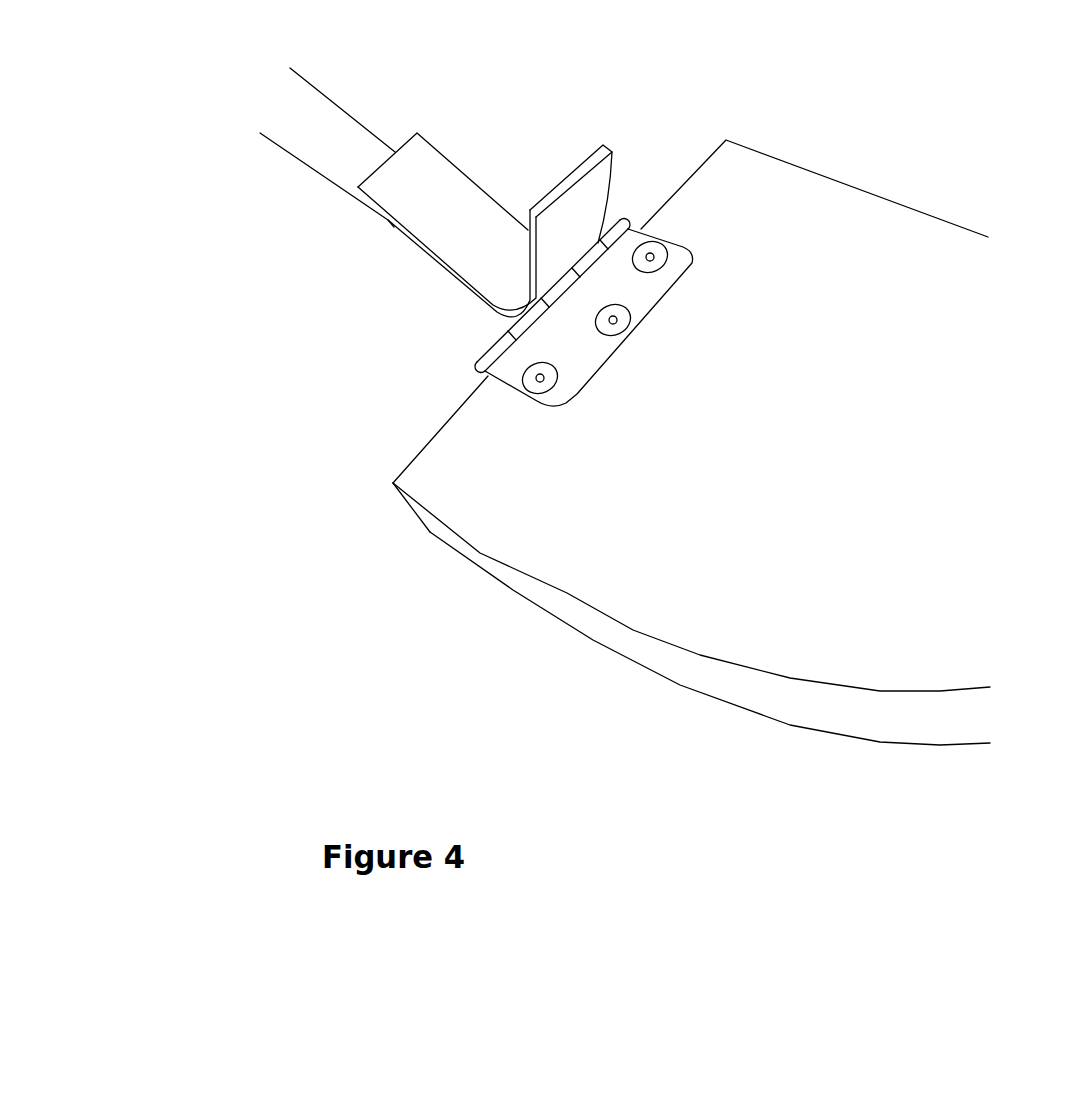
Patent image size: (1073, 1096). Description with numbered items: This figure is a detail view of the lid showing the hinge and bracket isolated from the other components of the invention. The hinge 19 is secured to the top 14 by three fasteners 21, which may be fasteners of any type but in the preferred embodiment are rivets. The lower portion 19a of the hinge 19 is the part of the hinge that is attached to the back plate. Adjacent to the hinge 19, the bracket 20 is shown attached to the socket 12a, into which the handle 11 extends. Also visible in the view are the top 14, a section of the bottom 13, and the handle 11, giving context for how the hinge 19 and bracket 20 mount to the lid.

The handle 11 is at (263, 123).
The socket 12a is at (413, 258).
The bottom 13 is at (758, 715).
The top 14 is at (903, 247).
The hinge 19 is at (552, 410).
The lower portion of the hinge 19a is at (477, 363).
The bracket 20 is at (562, 192).
The fasteners 21 is at (660, 265).